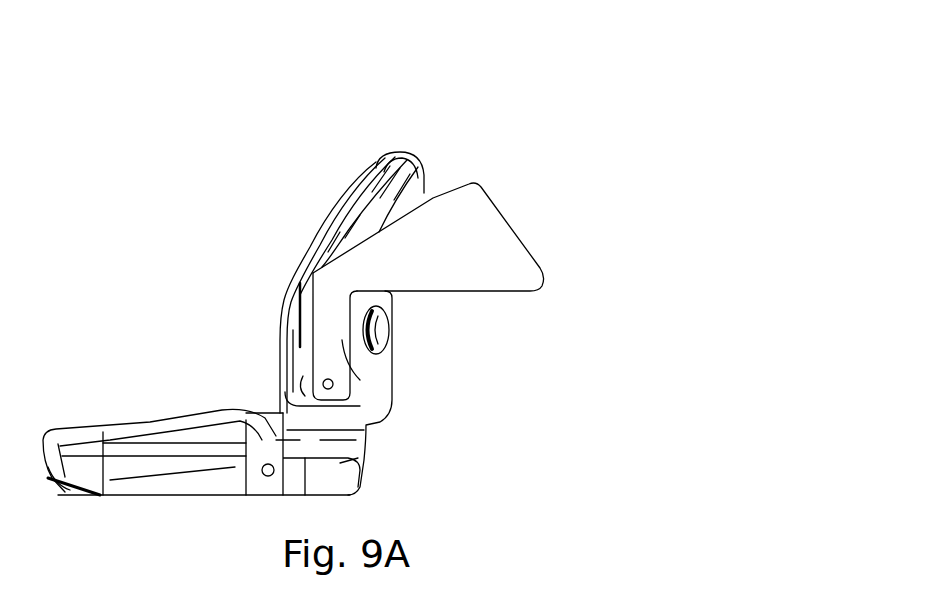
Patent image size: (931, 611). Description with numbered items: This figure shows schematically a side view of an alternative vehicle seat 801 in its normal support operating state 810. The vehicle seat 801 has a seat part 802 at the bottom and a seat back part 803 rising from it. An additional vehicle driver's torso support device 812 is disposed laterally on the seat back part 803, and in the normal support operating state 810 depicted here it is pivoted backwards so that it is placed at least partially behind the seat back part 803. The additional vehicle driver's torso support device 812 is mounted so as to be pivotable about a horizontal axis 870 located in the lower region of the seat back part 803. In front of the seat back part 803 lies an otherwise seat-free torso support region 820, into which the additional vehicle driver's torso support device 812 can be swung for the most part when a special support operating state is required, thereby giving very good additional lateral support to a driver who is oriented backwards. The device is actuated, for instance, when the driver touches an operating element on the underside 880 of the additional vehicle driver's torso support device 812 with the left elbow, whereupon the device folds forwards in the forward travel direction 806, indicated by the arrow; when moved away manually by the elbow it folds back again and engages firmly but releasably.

The vehicle seat 801 is at (495, 107).
The normal support operating state 810 is at (543, 145).
The additional vehicle driver's torso support device 812 is at (478, 243).
The seat back part 803 is at (385, 168).
The torso support region 820 is at (312, 231).
The underside 880 is at (312, 313).
The horizontal axis 870 is at (334, 386).
The seat part 802 is at (148, 457).
The forward travel direction 806 is at (150, 305).